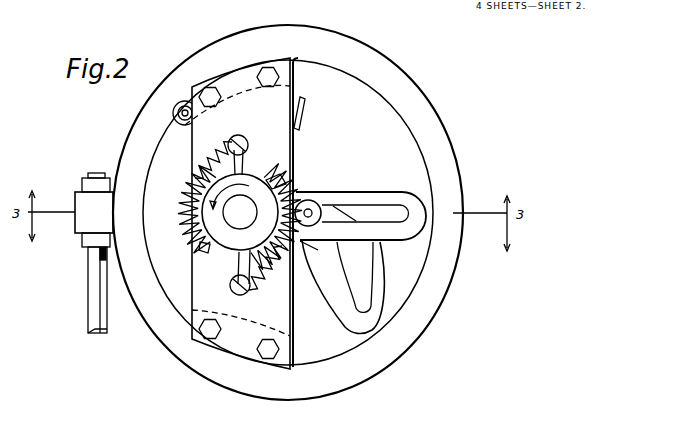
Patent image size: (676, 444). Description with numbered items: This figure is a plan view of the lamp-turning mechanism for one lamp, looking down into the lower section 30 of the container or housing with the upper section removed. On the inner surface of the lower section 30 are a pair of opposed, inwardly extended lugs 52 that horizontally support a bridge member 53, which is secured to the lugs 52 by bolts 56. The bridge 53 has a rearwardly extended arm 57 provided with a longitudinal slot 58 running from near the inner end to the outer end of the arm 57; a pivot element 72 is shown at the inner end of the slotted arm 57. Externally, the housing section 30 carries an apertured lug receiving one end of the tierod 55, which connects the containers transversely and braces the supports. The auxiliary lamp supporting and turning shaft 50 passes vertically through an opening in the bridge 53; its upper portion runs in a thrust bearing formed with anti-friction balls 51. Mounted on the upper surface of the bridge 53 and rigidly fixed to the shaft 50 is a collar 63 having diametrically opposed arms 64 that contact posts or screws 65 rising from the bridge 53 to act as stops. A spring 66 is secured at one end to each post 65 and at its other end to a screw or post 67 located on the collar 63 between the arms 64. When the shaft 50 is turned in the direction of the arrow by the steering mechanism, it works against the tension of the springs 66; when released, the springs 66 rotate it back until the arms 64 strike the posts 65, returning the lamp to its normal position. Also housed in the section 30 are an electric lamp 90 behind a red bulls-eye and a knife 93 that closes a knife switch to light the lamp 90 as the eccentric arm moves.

The lower section of the container or housing 30 is at (413, 265).
The auxiliary lamp supporting and turning shaft 50 is at (240, 217).
The anti-friction balls 51 is at (83, 217).
The lugs 52 is at (243, 82).
The bridge member 53 is at (292, 178).
The tierod 55 is at (92, 304).
The bolts 56 is at (280, 77).
The rearwardly extended arm 57 is at (358, 192).
The longitudinal slot 58 is at (388, 214).
The collar 63 is at (232, 247).
The arms 64 is at (246, 160).
The posts or screws 65 is at (247, 137).
The spring 66 is at (203, 166).
The screw or post 67 is at (283, 180).
The pivot pin 72 is at (310, 211).
The electric lamp 90 is at (177, 115).
The knife 93 is at (306, 108).